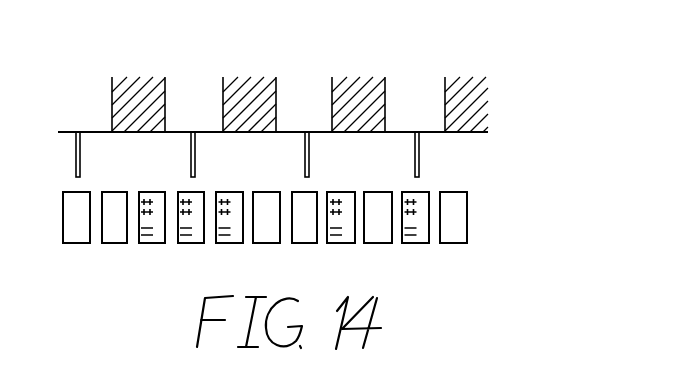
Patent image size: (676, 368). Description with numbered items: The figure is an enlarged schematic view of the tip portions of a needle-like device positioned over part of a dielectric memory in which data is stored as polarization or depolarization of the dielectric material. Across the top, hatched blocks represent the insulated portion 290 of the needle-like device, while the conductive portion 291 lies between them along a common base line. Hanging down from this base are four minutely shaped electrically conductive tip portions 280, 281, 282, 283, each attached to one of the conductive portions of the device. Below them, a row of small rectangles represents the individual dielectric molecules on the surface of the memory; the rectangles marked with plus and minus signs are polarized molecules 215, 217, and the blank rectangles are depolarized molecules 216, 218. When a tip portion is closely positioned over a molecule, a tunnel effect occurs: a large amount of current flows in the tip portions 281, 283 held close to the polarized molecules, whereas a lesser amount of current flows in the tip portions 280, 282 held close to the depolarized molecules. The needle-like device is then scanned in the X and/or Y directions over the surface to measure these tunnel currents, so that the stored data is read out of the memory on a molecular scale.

The insulated portion 290 is at (135, 92).
The conductive portion 291 is at (203, 90).
The tip portion 280 is at (82, 158).
The tip portion 281 is at (197, 158).
The tip portion 282 is at (310, 158).
The tip portion 283 is at (420, 158).
The polarized molecule 215 is at (412, 243).
The depolarized molecule 216 is at (303, 243).
The polarized molecule 217 is at (190, 243).
The depolarized molecule 218 is at (76, 239).